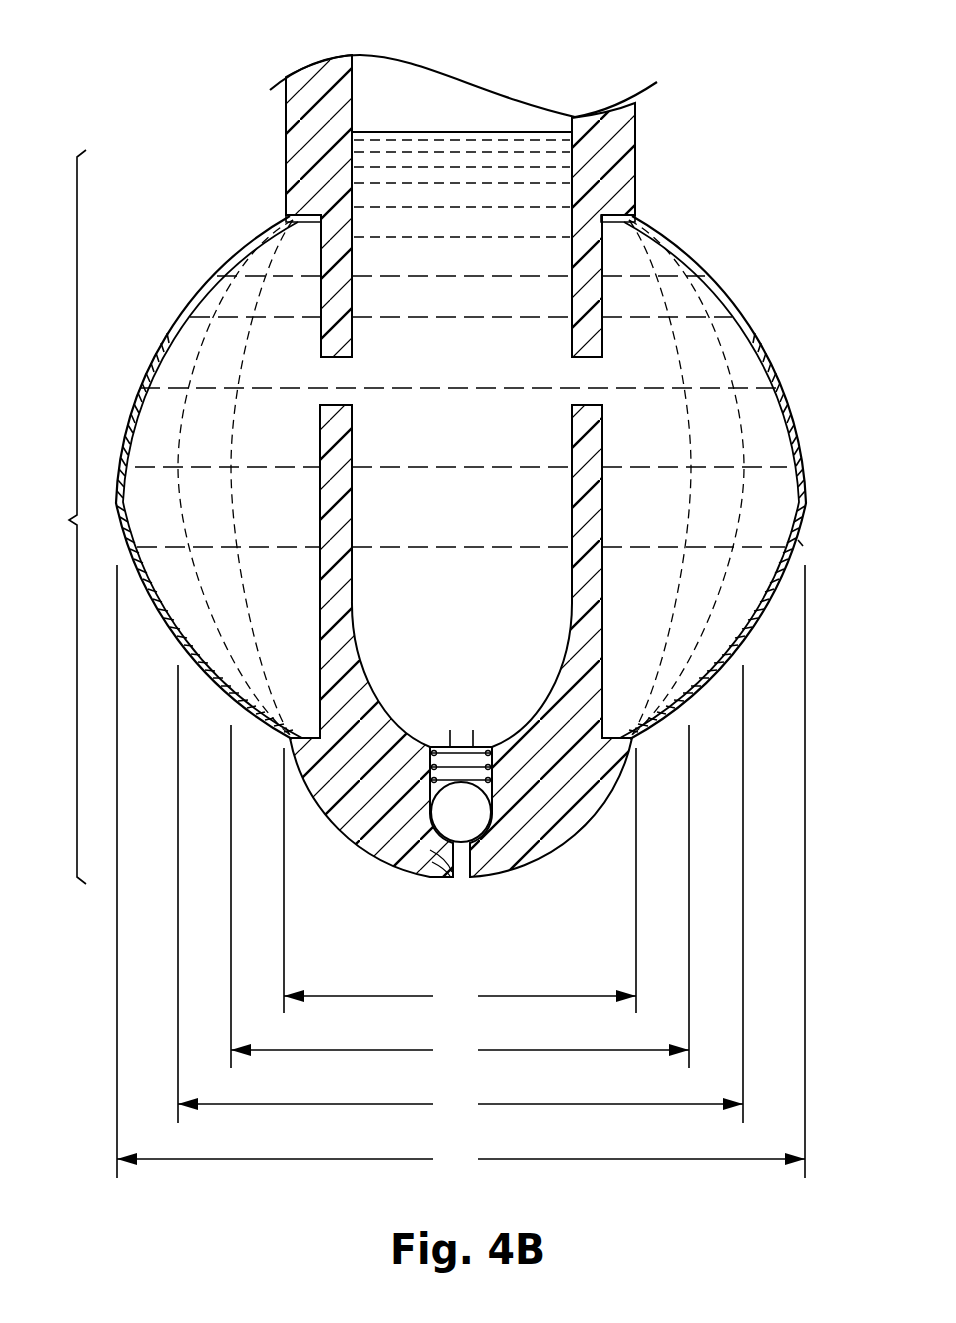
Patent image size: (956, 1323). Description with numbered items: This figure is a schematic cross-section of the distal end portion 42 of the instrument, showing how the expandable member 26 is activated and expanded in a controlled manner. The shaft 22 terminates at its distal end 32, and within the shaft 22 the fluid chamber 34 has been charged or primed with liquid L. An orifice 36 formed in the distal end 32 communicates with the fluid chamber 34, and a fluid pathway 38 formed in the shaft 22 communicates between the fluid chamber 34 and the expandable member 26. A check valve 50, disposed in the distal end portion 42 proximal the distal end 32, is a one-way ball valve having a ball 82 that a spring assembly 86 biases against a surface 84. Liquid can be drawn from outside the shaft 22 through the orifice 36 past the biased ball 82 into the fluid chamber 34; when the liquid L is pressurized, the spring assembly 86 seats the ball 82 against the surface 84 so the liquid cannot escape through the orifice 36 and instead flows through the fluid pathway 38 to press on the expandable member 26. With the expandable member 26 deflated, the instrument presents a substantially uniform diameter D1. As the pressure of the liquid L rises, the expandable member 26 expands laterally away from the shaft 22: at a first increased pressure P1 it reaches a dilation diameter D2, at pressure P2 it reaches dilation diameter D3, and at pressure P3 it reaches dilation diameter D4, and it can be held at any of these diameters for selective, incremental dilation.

The shaft 22 is at (299, 138).
The liquid L is at (488, 132).
The fluid chamber 34 is at (487, 197).
The fluid pathway 38 is at (348, 372).
The expandable member 26 is at (142, 375).
The first increased pressure P1 is at (742, 415).
The pressure P2 is at (745, 484).
The pressure P3 is at (803, 546).
The distal end portion 42 is at (62, 517).
The check valve 50 is at (460, 726).
The ball 82 is at (455, 800).
The spring assembly 86 is at (475, 750).
The surface 84 is at (424, 870).
The orifice 36 is at (460, 868).
The distal end 32 is at (475, 880).
The diameter D1 is at (460, 880).
The dilation diameter D2 is at (460, 896).
The dilation diameter D3 is at (460, 894).
The dilation diameter D4 is at (461, 871).